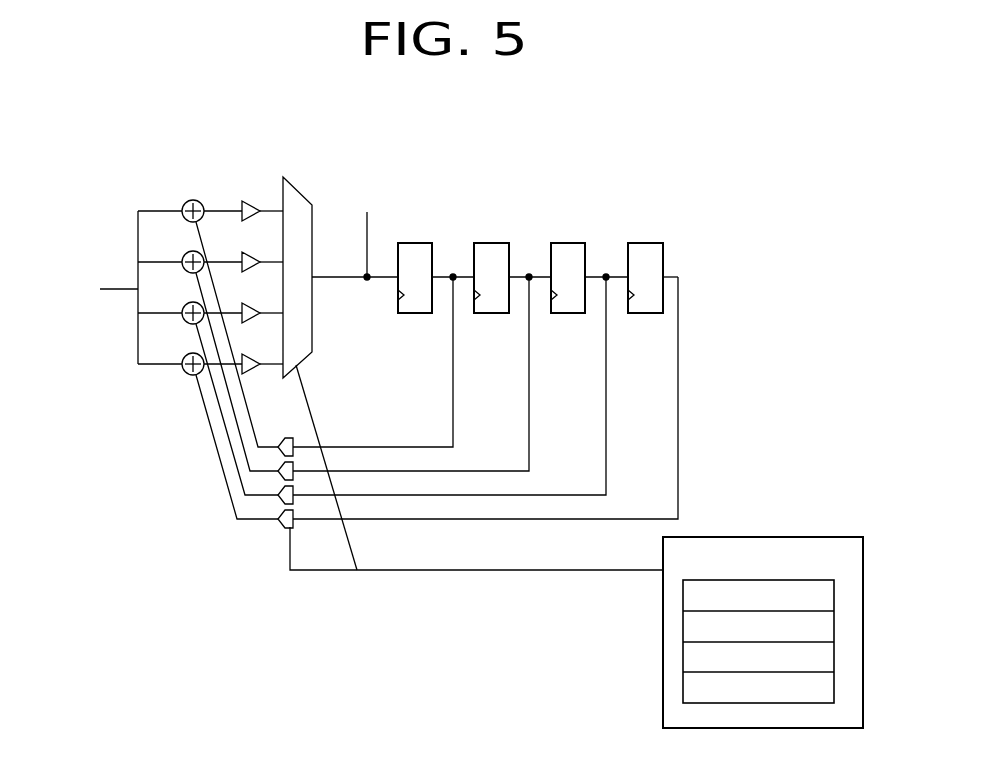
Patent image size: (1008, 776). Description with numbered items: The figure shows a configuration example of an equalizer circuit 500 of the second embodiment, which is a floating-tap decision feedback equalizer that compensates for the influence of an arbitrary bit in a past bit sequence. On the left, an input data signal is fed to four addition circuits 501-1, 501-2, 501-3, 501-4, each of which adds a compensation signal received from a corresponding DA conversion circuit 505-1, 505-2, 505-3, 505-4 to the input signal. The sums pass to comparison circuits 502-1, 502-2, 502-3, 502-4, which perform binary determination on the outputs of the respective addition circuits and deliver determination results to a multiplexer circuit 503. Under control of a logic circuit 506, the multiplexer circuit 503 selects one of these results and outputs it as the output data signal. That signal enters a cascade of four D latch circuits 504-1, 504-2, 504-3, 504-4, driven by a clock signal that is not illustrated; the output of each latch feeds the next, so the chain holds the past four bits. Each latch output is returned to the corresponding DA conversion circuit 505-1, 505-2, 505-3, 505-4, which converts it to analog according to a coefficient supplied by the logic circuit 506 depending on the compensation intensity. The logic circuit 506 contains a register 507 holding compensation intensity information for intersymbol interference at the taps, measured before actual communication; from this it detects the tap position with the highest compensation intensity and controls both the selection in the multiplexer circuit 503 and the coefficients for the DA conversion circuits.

The equalizer circuit 500 is at (465, 118).
The addition circuit 501-1 is at (183, 203).
The addition circuit 501-2 is at (183, 254).
The addition circuit 501-3 is at (183, 305).
The addition circuit 501-4 is at (183, 356).
The comparison circuit 502-1 is at (257, 202).
The comparison circuit 502-2 is at (257, 253).
The comparison circuit 502-3 is at (257, 304).
The comparison circuit 502-4 is at (255, 374).
The multiplexer circuit 503 is at (312, 330).
The D latch circuit 504-1 is at (417, 243).
The D latch circuit 504-2 is at (494, 243).
The D latch circuit 504-3 is at (571, 243).
The D latch circuit 504-4 is at (649, 243).
The DA conversion circuit 505-1 is at (297, 440).
The DA conversion circuit 505-2 is at (295, 465).
The DA conversion circuit 505-3 is at (295, 489).
The DA conversion circuit 505-4 is at (295, 513).
The logic circuit 506 is at (767, 537).
The register 507 is at (816, 580).